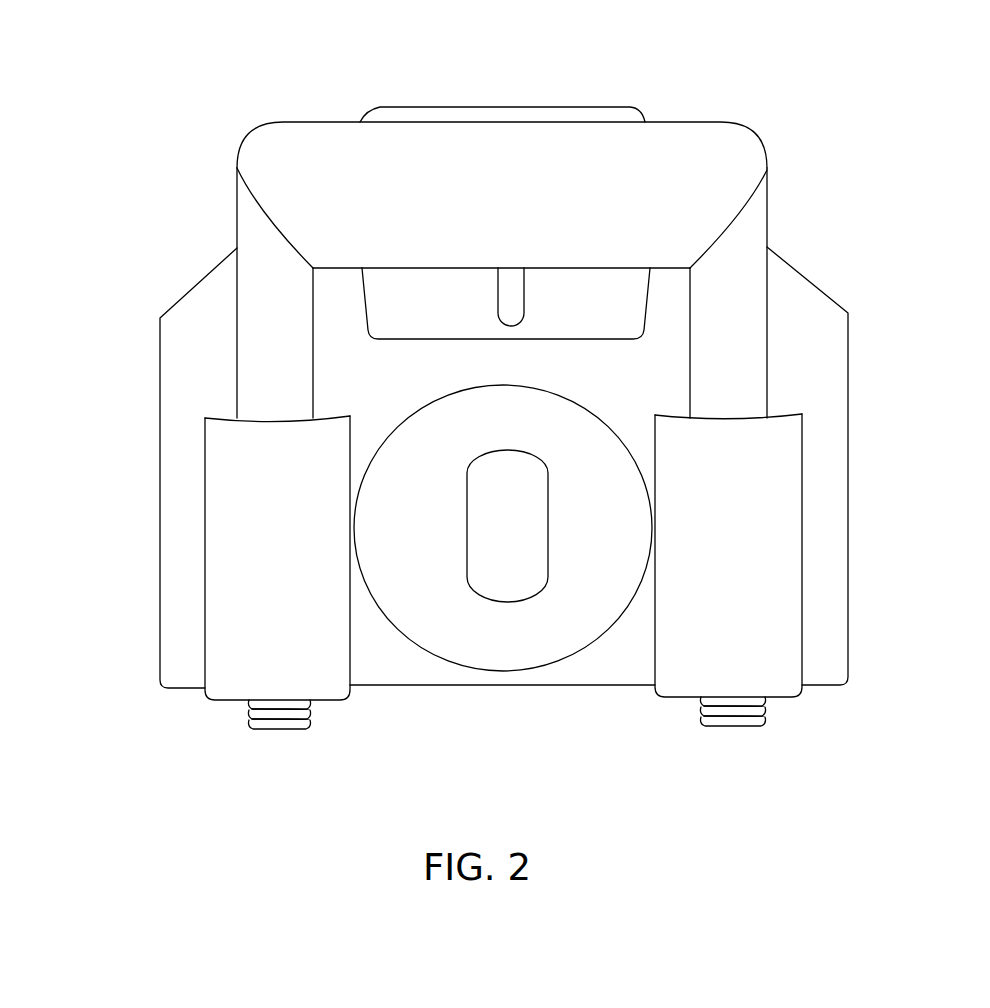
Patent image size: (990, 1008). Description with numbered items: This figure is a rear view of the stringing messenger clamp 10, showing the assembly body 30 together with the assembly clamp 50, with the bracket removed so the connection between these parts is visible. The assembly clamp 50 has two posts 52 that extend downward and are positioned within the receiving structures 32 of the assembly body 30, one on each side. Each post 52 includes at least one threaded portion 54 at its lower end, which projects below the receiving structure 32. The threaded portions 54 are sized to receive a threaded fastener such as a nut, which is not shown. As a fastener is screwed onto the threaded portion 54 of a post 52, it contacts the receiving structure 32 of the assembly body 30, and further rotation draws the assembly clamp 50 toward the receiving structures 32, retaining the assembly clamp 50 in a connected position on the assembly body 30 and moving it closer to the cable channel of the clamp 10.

The stringing messenger clamp 10 is at (960, 70).
The assembly body 30 is at (183, 403).
The receiving structure 32 is at (260, 553).
The assembly clamp 50 is at (690, 158).
The post 52 is at (273, 310).
The threaded portion 54 is at (278, 722).